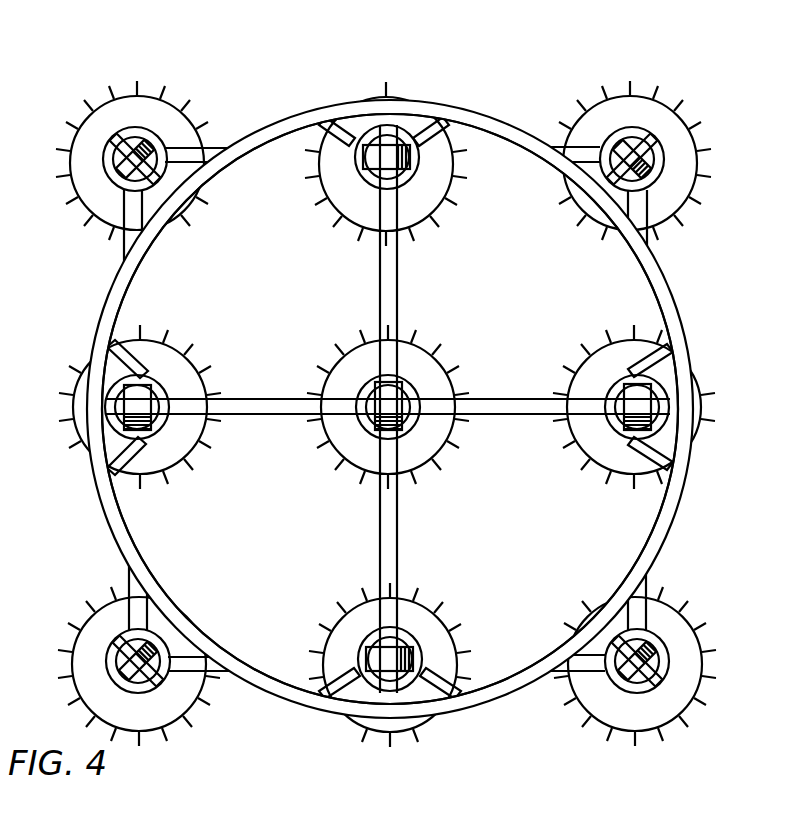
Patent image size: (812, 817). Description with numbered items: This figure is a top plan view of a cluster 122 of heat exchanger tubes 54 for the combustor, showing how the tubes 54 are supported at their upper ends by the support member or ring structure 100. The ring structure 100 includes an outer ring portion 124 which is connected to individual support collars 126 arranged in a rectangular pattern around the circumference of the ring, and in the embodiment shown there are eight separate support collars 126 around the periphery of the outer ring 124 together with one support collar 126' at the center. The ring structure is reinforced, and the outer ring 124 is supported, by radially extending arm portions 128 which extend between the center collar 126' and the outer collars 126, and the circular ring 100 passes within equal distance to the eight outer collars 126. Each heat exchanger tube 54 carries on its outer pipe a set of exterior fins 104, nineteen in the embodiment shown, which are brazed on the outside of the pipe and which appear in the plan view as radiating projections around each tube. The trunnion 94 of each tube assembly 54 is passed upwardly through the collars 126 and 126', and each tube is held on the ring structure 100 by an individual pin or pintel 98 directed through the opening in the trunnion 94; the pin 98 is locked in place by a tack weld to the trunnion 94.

The support member 100 is at (412, 411).
The cluster 122 is at (427, 385).
The outer ring portion 124 is at (298, 122).
The radially extending arm portions 128 is at (512, 399).
The support collars 126 is at (383, 150).
The center support collar 126' is at (412, 410).
The exterior fins 104 is at (407, 676).
The heat exchanger tube 54 is at (368, 731).
The securing pin 98 is at (633, 661).
The trunnion extension 94 is at (623, 674).